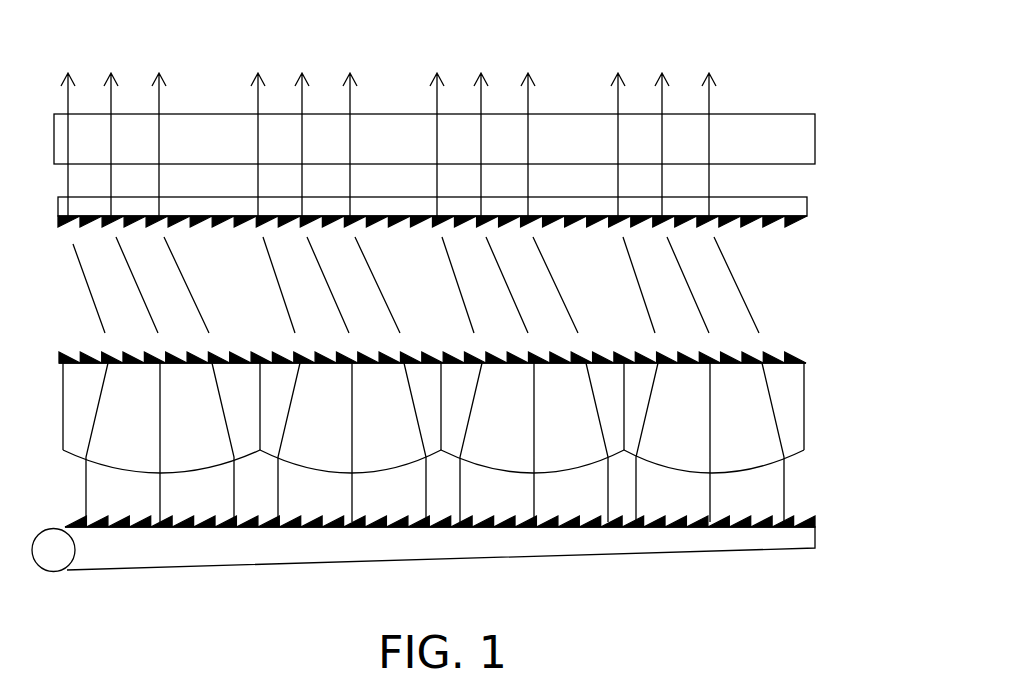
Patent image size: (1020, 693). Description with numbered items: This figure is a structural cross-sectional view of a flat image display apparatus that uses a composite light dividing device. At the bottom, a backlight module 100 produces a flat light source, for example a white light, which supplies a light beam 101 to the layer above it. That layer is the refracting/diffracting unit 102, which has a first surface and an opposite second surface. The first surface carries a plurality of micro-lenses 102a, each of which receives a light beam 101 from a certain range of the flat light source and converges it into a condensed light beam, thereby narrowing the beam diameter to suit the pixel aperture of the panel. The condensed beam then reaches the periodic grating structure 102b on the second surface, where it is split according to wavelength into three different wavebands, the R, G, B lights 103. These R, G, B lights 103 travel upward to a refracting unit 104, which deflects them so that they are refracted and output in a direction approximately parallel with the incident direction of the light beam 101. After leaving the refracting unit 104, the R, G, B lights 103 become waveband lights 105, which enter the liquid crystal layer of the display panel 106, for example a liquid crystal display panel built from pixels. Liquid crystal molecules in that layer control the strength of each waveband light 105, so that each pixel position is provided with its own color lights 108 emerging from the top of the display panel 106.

The backlight module 100 is at (793, 547).
The light beam 101 is at (795, 492).
The refracting/diffracting unit 102 is at (804, 408).
The micro-lenses 102a is at (813, 463).
The periodic grating structure 102b is at (776, 336).
The R, G, B lights 103 is at (762, 294).
The refracting unit 104 is at (807, 218).
The waveband lights 105 is at (720, 188).
The display panel 106 is at (800, 143).
The color lights 108 is at (742, 72).